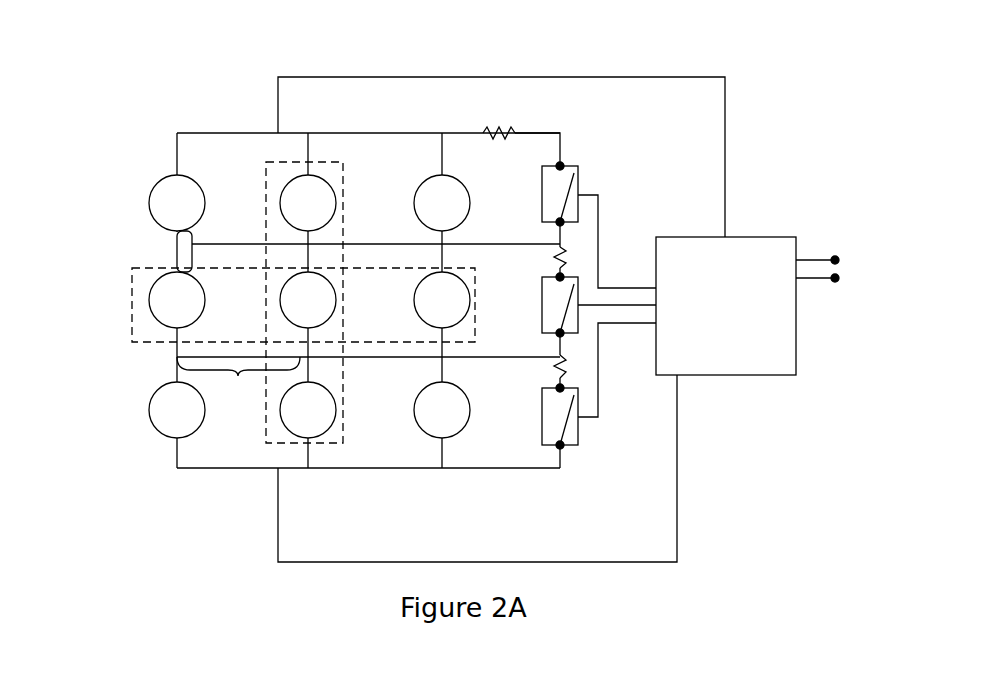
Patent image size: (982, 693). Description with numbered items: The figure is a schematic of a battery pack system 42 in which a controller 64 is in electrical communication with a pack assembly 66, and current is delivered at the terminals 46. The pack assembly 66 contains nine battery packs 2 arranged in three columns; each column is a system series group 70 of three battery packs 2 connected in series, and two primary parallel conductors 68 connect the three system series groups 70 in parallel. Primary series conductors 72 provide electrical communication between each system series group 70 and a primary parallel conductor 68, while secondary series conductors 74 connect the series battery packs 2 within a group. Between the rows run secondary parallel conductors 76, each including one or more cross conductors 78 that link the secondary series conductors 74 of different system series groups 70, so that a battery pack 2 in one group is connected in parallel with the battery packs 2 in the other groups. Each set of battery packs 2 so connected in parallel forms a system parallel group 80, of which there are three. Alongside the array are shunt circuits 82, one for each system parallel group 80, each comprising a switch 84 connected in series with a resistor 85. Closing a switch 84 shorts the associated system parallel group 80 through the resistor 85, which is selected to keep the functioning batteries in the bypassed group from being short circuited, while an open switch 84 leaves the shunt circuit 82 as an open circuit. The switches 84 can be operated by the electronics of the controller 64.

The battery pack 2 is at (203, 192).
The battery pack system 42 is at (130, 517).
The terminals 46 is at (837, 252).
The controller 64 is at (773, 428).
The pack assembly 66 is at (203, 103).
The primary parallel conductor 68 is at (397, 130).
The system series group 70 is at (325, 160).
The primary series conductor 72 is at (177, 154).
The secondary series conductor 74 is at (192, 238).
The secondary parallel conductor 76 is at (247, 244).
The cross conductor 78 is at (368, 381).
The system parallel group 80 is at (477, 325).
The shunt circuit 82 is at (580, 132).
The switch 84 is at (580, 167).
The resistor 85 is at (504, 116).